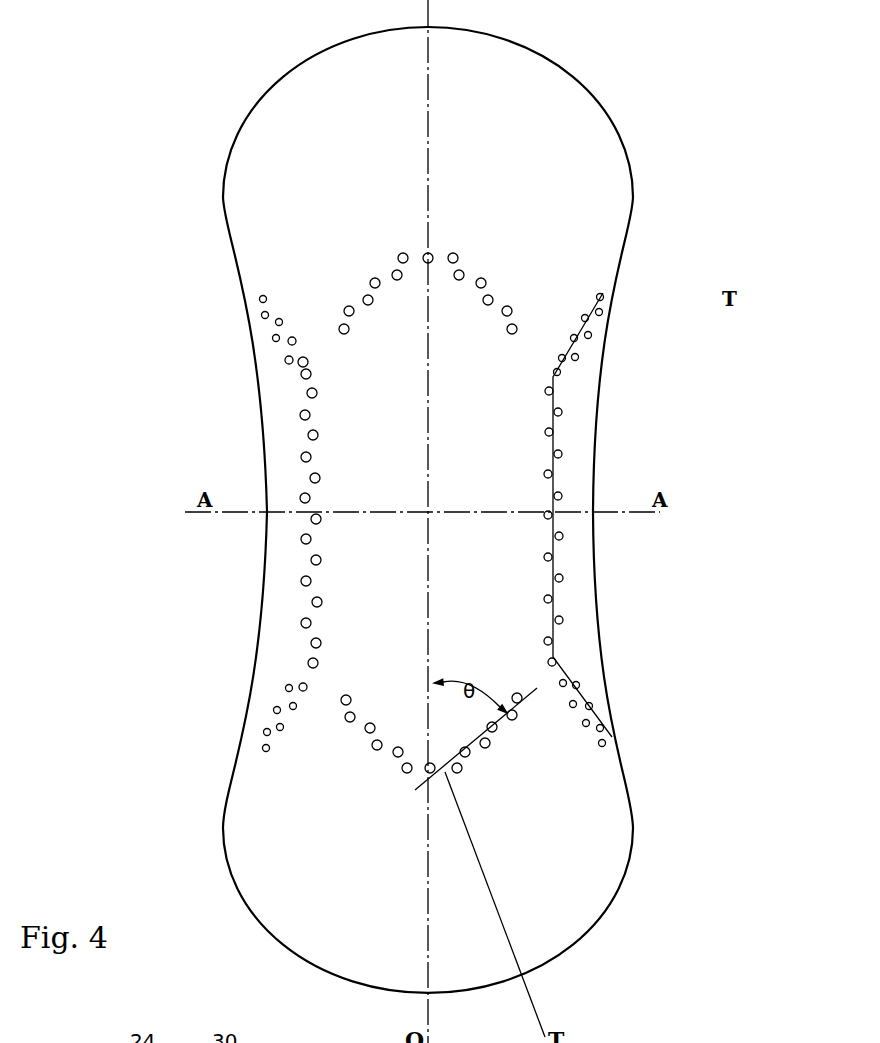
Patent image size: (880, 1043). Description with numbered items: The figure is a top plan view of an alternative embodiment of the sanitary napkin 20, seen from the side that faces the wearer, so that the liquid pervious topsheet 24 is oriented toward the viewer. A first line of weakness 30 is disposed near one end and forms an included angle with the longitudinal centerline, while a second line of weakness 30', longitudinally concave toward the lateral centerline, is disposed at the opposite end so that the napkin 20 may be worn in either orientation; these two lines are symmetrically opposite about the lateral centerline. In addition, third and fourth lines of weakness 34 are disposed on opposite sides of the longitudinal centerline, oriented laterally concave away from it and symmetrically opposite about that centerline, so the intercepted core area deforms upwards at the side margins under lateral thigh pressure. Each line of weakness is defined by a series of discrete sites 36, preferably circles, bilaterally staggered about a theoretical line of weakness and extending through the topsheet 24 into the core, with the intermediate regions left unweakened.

The sanitary napkin 20 is at (711, 821).
The liquid pervious topsheet 24 is at (350, 911).
The first line of weakness 30 is at (444, 263).
The second line of weakness 30' is at (427, 856).
The third and fourth lines of weakness 34 is at (601, 372).
The discrete sites 36 is at (733, 777).